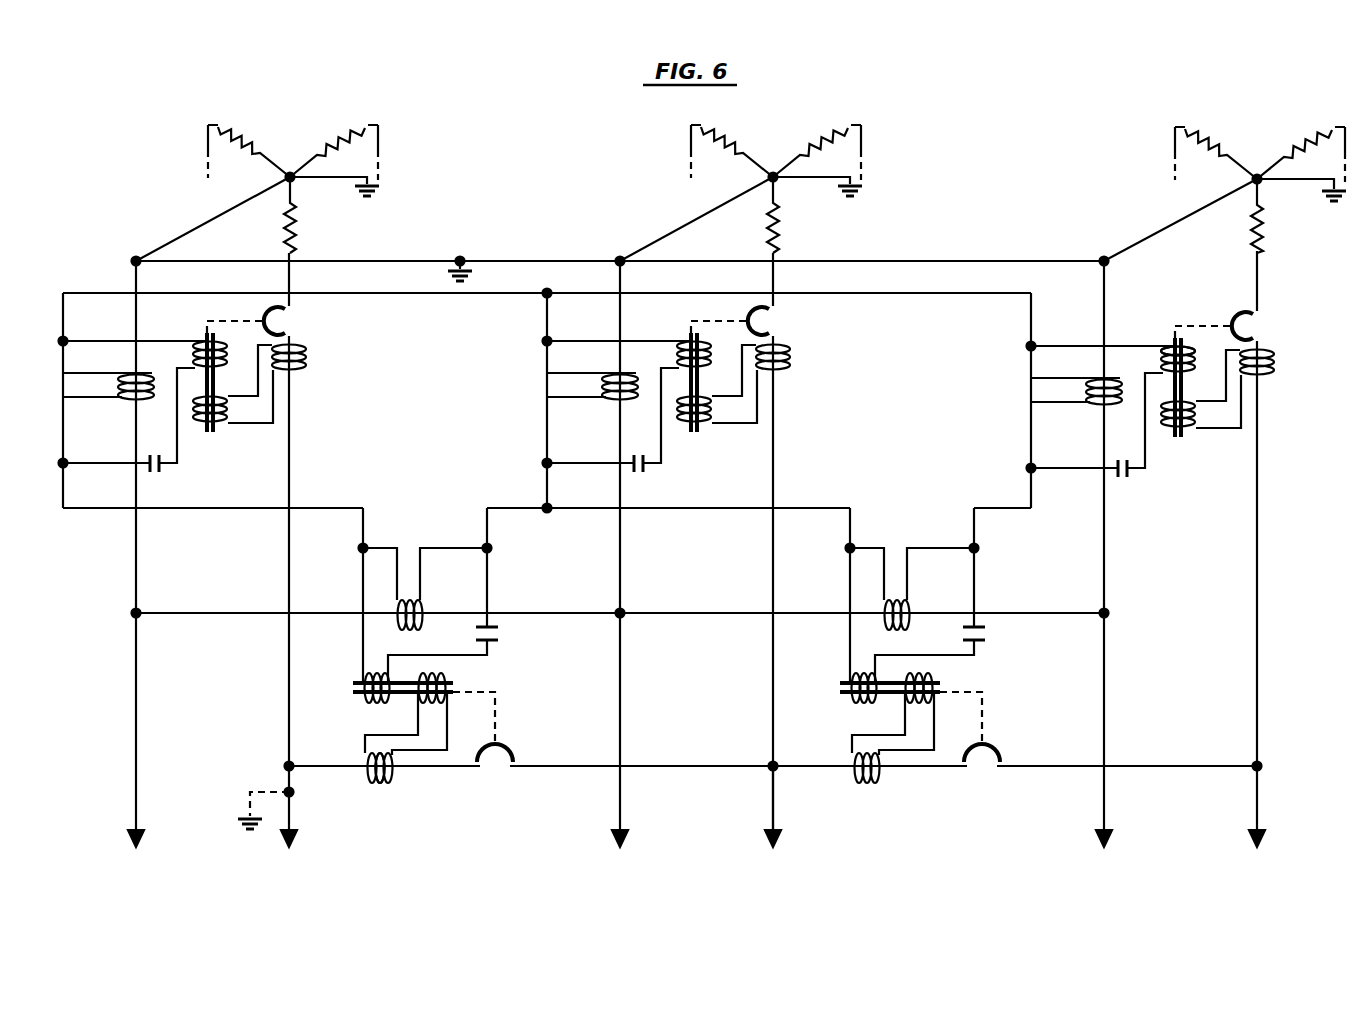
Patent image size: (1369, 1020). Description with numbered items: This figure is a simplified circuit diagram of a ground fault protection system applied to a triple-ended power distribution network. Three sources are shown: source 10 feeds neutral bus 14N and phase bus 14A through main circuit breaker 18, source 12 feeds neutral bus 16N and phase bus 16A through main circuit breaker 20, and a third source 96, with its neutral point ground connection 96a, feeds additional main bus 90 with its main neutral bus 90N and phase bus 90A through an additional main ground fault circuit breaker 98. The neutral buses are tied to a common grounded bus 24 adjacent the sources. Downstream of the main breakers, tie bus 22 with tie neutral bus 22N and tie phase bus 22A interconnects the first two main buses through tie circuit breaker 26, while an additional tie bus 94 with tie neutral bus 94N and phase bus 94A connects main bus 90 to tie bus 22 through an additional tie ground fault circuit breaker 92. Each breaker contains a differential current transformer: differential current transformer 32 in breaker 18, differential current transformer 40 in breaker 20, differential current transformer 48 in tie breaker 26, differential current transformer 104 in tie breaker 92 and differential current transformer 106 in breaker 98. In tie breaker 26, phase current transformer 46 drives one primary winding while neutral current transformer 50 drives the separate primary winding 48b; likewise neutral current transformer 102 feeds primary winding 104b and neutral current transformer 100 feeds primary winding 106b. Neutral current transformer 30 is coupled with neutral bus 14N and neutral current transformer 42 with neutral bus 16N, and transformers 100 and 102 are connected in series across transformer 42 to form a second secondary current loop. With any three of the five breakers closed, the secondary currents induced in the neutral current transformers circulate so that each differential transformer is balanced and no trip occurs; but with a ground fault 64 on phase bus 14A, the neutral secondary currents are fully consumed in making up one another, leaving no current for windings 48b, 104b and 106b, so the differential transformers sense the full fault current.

The power source 10 is at (302, 153).
The power source 12 is at (786, 154).
The third source 96 is at (1274, 156).
The neutral point ground connection 96a is at (1332, 199).
The common grounded bus 24 is at (412, 261).
The neutral bus of main bus 14 14N is at (140, 557).
The phase bus of main bus 14 14A is at (291, 805).
The neutral bus of main bus 16 16N is at (622, 488).
The phase bus of main bus 16 16A is at (775, 474).
The main neutral bus 90N is at (1106, 557).
The phase bus of main bus 90 90A is at (1260, 568).
The additional main bus 90 is at (1196, 586).
The neutral current transformer 30 is at (143, 377).
The differential current transformer 32 is at (207, 437).
The main circuit breaker 18 is at (316, 359).
The neutral current transformer 42 is at (631, 373).
The differential current transformer 40 is at (723, 385).
The main circuit breaker 20 is at (787, 384).
The neutral current transformer 100 is at (1117, 405).
The differential current transformer 106 is at (1207, 392).
The primary winding 106b is at (1164, 333).
The main ground fault circuit breaker 98 is at (1274, 385).
The tie neutral bus 22N is at (338, 610).
The neutral current transformer 50 is at (423, 625).
The differential current transformer 48 is at (458, 688).
The primary winding 48b is at (363, 701).
The phase current transformer 46 is at (372, 785).
The tie circuit breaker 26 is at (360, 792).
The tie bus 22 is at (577, 692).
The tie phase bus 22A is at (549, 766).
The tie neutral bus 94N is at (824, 595).
The neutral current transformer 102 is at (912, 596).
The differential current transformer 104 is at (920, 713).
The primary winding 104b is at (842, 702).
The tie ground fault circuit breaker 92 is at (893, 769).
The additional tie bus 94 is at (820, 692).
The phase bus of tie bus 94 94A is at (791, 775).
The ground fault 64 is at (246, 824).